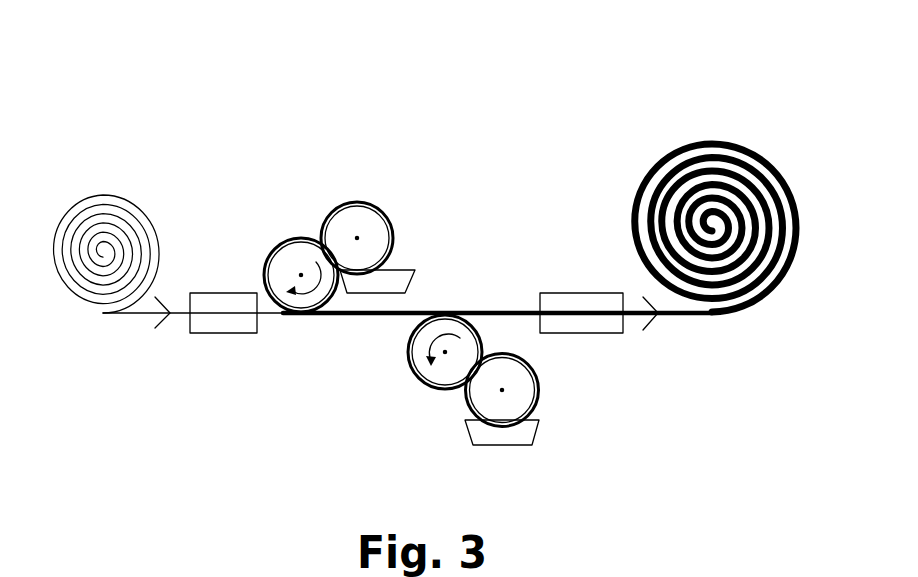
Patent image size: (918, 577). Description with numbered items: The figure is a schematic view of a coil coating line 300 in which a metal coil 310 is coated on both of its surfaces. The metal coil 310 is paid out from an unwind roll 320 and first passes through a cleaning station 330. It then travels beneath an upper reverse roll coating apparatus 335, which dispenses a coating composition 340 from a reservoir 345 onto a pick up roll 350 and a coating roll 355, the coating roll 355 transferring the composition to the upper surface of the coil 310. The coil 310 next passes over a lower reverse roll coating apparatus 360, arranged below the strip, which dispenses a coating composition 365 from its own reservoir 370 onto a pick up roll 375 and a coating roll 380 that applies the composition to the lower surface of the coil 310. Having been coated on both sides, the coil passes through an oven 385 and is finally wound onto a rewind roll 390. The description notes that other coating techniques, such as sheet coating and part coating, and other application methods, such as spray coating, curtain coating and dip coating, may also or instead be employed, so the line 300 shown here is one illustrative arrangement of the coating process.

The coil coating line 300 is at (573, 110).
The metal coil 310 is at (272, 317).
The unwind roll 320 is at (104, 195).
The cleaning station 330 is at (204, 329).
The upper reverse roll coating apparatus 335 is at (352, 165).
The coating composition 340 is at (506, 310).
The reservoir 345 is at (393, 278).
The pick up roll 350 is at (365, 220).
The coating roll 355 is at (293, 258).
The lower reverse roll coating apparatus 360 is at (440, 420).
The coating composition 365 is at (498, 318).
The reservoir 370 is at (503, 446).
The pick up roll 375 is at (518, 397).
The coating roll 380 is at (440, 368).
The oven 385 is at (580, 293).
The rewind roll 390 is at (708, 142).